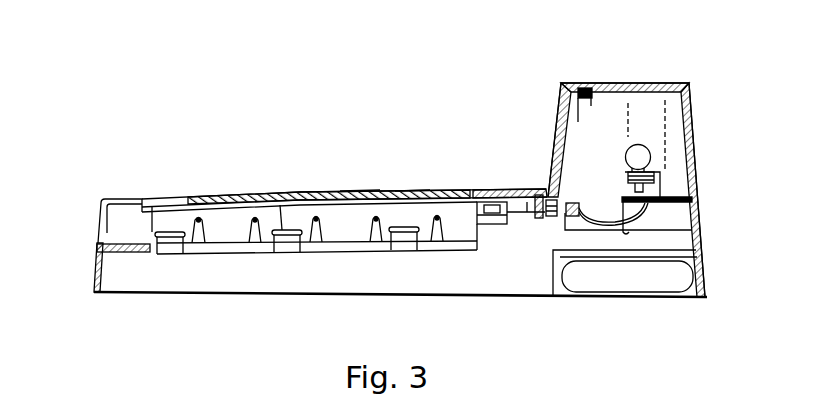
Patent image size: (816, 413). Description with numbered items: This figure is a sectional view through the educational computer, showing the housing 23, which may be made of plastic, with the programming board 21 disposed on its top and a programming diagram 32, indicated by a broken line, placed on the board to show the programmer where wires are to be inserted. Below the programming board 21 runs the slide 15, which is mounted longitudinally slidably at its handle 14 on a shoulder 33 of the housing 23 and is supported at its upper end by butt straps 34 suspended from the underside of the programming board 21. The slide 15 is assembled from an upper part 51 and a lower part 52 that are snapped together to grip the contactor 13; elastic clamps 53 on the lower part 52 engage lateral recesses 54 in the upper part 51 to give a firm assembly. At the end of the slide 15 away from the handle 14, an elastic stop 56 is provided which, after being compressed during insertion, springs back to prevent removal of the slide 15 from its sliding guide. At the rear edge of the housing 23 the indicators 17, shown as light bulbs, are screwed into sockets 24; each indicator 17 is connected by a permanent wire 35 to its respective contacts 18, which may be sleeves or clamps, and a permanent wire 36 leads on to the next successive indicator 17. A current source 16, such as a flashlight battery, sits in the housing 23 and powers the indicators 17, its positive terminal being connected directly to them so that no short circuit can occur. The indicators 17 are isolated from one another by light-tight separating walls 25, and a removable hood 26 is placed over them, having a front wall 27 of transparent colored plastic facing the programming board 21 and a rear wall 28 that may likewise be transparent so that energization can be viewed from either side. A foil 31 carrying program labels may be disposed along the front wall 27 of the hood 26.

The contactor 13 is at (200, 225).
The handle 14 is at (102, 200).
The slide 15 is at (334, 216).
The current source 16 is at (597, 278).
The indicator 17 is at (637, 148).
The contacts 18 is at (539, 224).
The programming board 21 is at (238, 191).
The housing 23 is at (97, 277).
The socket 24 is at (660, 182).
The separating wall 25 is at (627, 97).
The removable hood 26 is at (653, 83).
The front wall 27 is at (556, 130).
The rear wall 28 is at (683, 118).
The foil 31 is at (578, 123).
The programming diagram 32 is at (352, 197).
The shoulder 33 is at (139, 252).
The butt strap 34 is at (492, 222).
The permanent wire 35 is at (629, 232).
The permanent wire 36 is at (617, 214).
The upper part 51 is at (406, 202).
The lower part 52 is at (252, 250).
The elastic clamp 53 is at (172, 246).
The lateral recess 54 is at (152, 210).
The elastic stop 56 is at (479, 226).